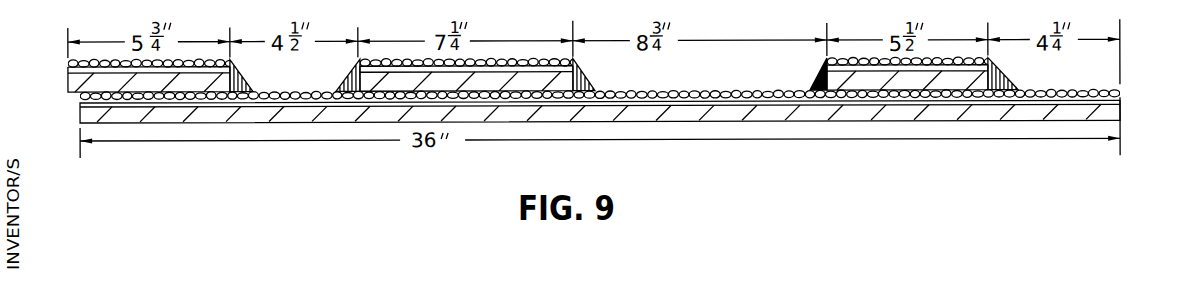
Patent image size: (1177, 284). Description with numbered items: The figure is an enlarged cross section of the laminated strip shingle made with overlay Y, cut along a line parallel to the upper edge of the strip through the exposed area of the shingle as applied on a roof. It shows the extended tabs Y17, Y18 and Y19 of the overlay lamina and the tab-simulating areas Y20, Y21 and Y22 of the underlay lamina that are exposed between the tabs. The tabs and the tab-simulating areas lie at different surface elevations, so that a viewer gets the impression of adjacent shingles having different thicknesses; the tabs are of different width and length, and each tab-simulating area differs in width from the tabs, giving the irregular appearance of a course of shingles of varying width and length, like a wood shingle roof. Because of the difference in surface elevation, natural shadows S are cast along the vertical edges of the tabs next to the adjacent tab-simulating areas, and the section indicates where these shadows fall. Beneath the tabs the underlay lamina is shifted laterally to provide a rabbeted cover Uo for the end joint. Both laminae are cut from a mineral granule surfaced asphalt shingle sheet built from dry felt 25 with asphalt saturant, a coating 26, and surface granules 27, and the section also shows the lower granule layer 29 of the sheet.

The extended tab Y17 is at (67, 61).
The extended tab Y18 is at (729, 71).
The extended tab Y19 is at (826, 62).
The tab-simulating area Y20 is at (327, 91).
The tab-simulating area Y21 is at (733, 94).
The tab-simulating area Y22 is at (1122, 99).
The rabbeted cover Uo is at (81, 104).
The natural shadow S is at (239, 84).
The dry felt 25 is at (527, 87).
The coating 26 is at (485, 72).
The granules 27 is at (407, 61).
The lower granule layer 29 is at (513, 91).